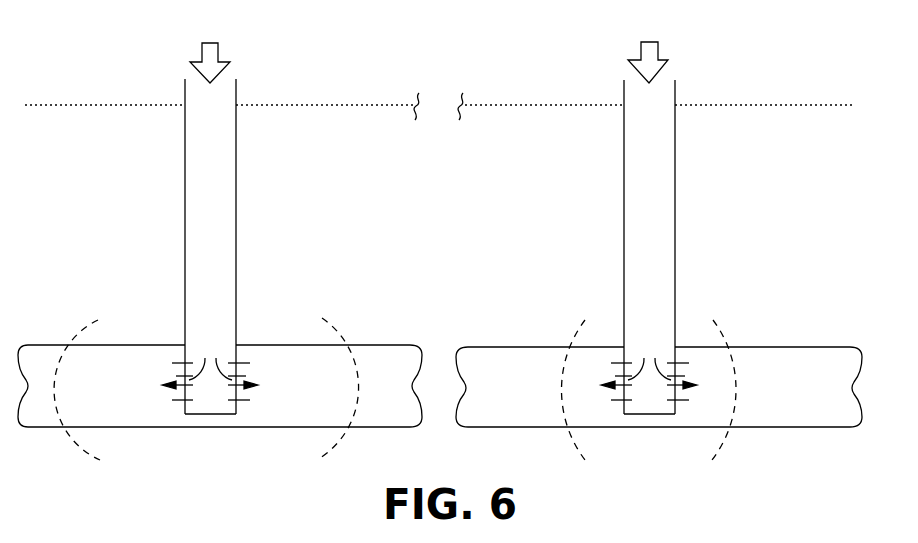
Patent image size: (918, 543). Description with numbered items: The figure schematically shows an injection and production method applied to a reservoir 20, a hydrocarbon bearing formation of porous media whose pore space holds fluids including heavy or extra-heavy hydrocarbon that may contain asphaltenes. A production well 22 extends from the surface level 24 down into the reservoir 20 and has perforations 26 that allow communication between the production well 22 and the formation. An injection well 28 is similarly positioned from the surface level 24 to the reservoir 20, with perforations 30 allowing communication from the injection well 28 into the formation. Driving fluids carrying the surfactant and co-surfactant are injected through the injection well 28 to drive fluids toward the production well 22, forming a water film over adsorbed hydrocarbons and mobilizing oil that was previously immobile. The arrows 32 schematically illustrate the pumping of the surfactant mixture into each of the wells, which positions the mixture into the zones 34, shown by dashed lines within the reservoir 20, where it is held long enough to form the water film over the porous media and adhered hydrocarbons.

The reservoir 20 is at (527, 370).
The production well 22 is at (222, 230).
The surface level 24 is at (243, 103).
The perforations 26 is at (236, 365).
The injection well 28 is at (640, 195).
The perforations 30 is at (673, 375).
The arrows 32 is at (219, 54).
The zones 34 is at (290, 375).